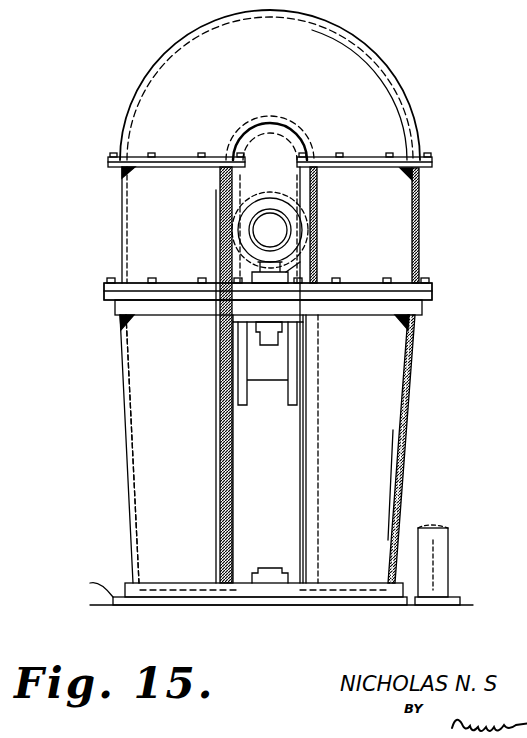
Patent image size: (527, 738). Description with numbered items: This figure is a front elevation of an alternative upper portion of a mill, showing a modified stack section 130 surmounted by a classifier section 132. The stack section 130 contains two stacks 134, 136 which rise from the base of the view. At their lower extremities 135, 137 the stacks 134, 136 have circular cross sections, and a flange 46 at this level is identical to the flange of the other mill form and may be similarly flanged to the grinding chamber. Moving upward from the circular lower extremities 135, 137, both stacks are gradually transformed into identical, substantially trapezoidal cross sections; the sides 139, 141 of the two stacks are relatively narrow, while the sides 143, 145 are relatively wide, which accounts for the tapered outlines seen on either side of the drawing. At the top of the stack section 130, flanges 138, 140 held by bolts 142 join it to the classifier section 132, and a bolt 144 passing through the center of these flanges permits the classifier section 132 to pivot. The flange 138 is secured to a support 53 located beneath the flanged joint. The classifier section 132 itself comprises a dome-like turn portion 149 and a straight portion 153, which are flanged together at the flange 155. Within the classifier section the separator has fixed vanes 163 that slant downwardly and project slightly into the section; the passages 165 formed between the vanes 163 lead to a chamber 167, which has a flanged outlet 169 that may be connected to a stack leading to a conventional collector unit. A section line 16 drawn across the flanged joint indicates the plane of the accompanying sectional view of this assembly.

The turn portion 149 is at (372, 80).
The flange 155 is at (110, 157).
The section line 16- 16 is at (450, 170).
The classifier section 132 is at (466, 158).
The stack 134 is at (136, 440).
The side 143 is at (130, 490).
The straight portion 153 is at (404, 210).
The side 145 is at (412, 404).
The stack 136 is at (398, 470).
The side 139 is at (226, 448).
The side 141 is at (316, 505).
The chamber 167 is at (224, 191).
The passages 165 is at (312, 226).
The fixed vanes 163 is at (316, 240).
The flanged outlet 169 is at (246, 233).
The bolt 144 is at (302, 263).
The flange 140 is at (432, 290).
The flange 138 is at (432, 301).
The bolts 142 is at (108, 280).
The stack section 130 is at (454, 350).
The support 53 is at (258, 374).
The lower extremity 135 is at (162, 605).
The lower extremity 137 is at (372, 606).
The flange 46 is at (92, 582).